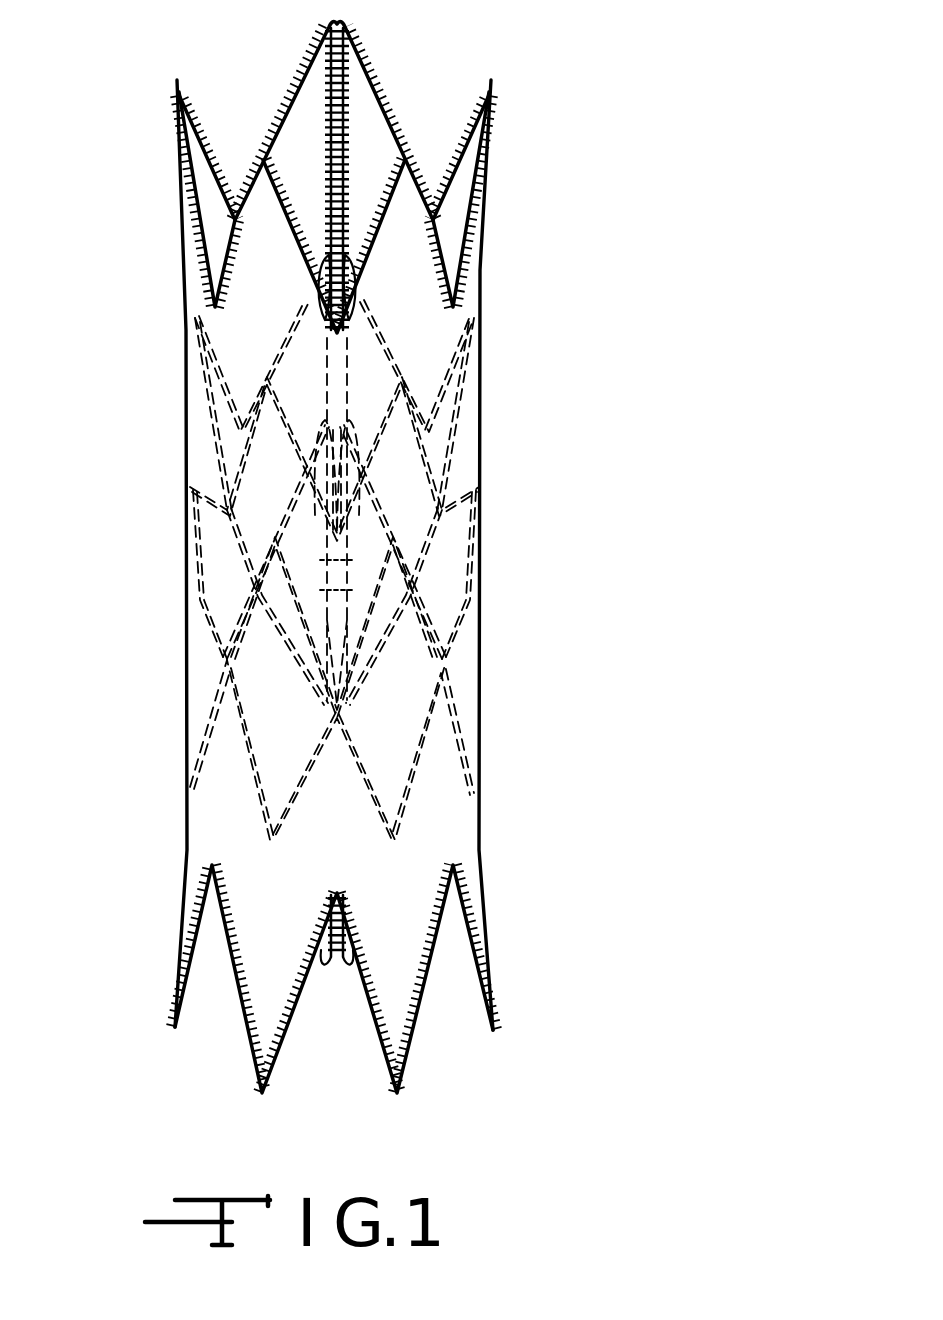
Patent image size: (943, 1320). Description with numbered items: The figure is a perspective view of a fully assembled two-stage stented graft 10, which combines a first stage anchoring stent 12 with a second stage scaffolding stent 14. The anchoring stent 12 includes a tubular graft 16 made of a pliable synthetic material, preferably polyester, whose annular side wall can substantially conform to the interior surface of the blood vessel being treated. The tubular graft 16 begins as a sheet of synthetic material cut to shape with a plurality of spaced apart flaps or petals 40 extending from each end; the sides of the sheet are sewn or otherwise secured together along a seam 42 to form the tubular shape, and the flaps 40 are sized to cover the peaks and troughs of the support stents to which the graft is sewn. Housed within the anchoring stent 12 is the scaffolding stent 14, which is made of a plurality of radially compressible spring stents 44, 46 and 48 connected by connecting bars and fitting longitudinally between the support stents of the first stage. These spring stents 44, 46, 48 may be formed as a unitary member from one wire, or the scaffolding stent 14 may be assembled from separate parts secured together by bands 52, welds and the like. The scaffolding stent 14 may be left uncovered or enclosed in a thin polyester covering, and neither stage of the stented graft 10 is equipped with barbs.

The two-stage stented graft 10 is at (617, 90).
The first stage anchoring stent 12 is at (481, 263).
The second stage scaffolding stent 14 is at (483, 457).
The tubular graft 16 is at (440, 823).
The flaps or petals 40 is at (198, 178).
The seam 42 is at (343, 110).
The spring stent 44 is at (473, 405).
The spring stent 46 is at (460, 593).
The spring stent 48 is at (457, 703).
The bands 52 is at (327, 550).